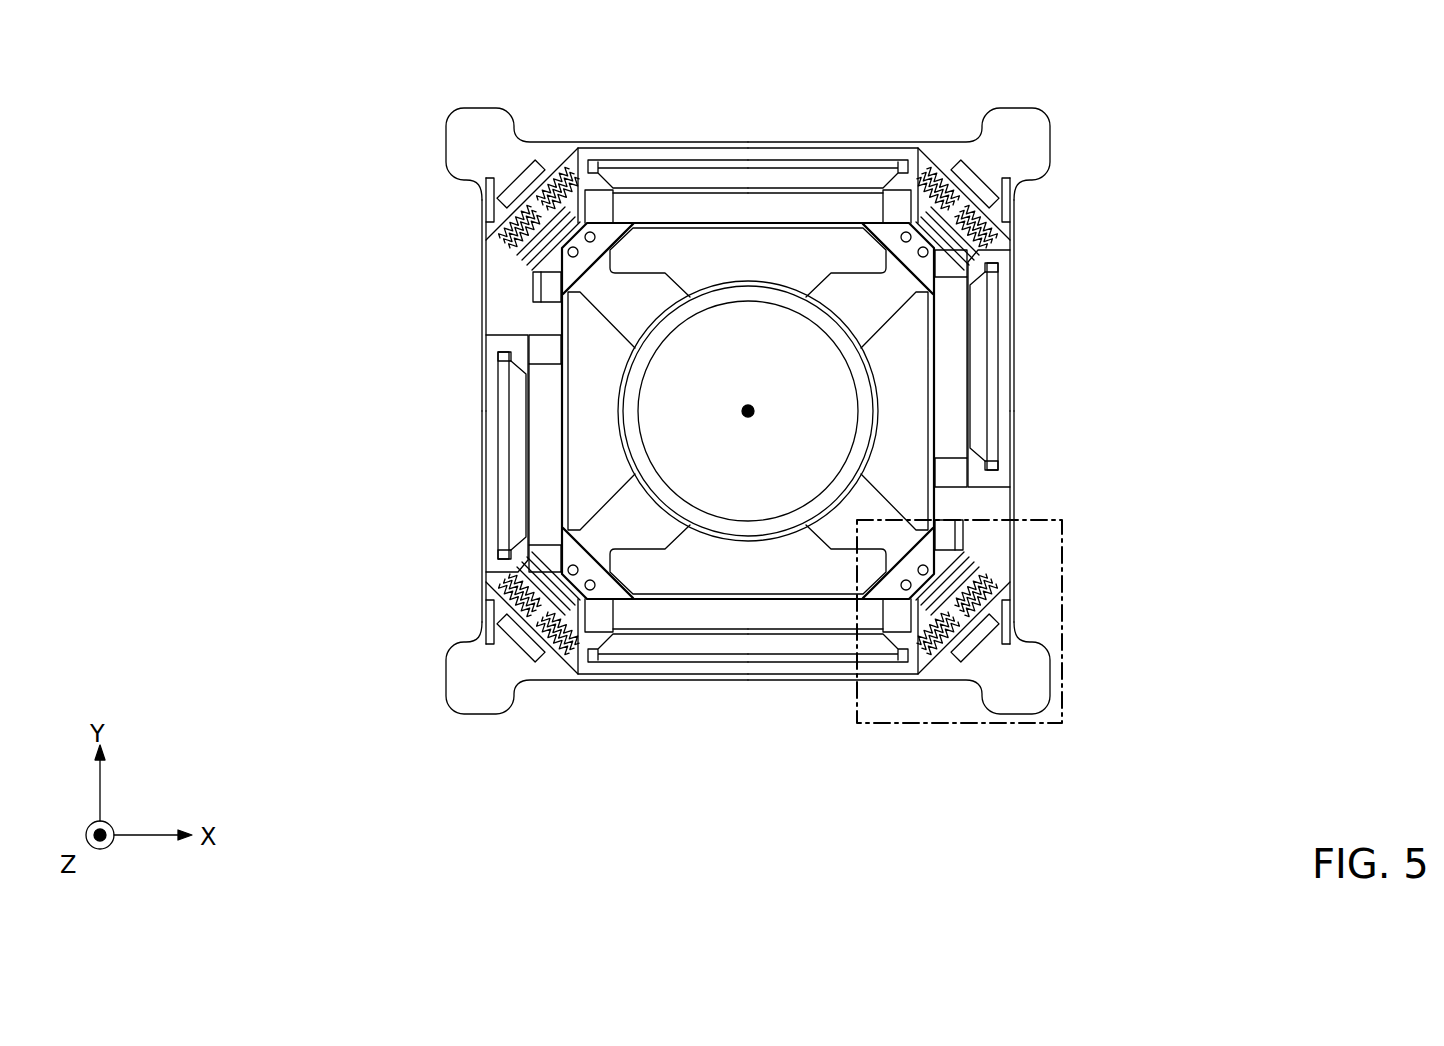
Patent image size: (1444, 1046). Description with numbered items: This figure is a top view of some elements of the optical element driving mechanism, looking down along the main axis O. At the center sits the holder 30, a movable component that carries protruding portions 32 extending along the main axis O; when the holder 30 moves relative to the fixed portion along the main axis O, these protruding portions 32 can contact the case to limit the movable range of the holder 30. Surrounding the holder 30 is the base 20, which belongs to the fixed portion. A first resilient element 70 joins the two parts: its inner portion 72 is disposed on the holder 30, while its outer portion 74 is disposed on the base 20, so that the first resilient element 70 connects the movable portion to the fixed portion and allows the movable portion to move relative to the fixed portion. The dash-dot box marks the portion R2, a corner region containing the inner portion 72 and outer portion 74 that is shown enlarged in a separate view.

The base 20 is at (1045, 678).
The holder 30 is at (668, 222).
The protruding portions 32 is at (756, 258).
The first resilient element 70 is at (935, 355).
The inner portion 72 is at (928, 552).
The outer portion 74 is at (997, 637).
The portion R2 is at (1062, 593).
The main axis O is at (759, 423).